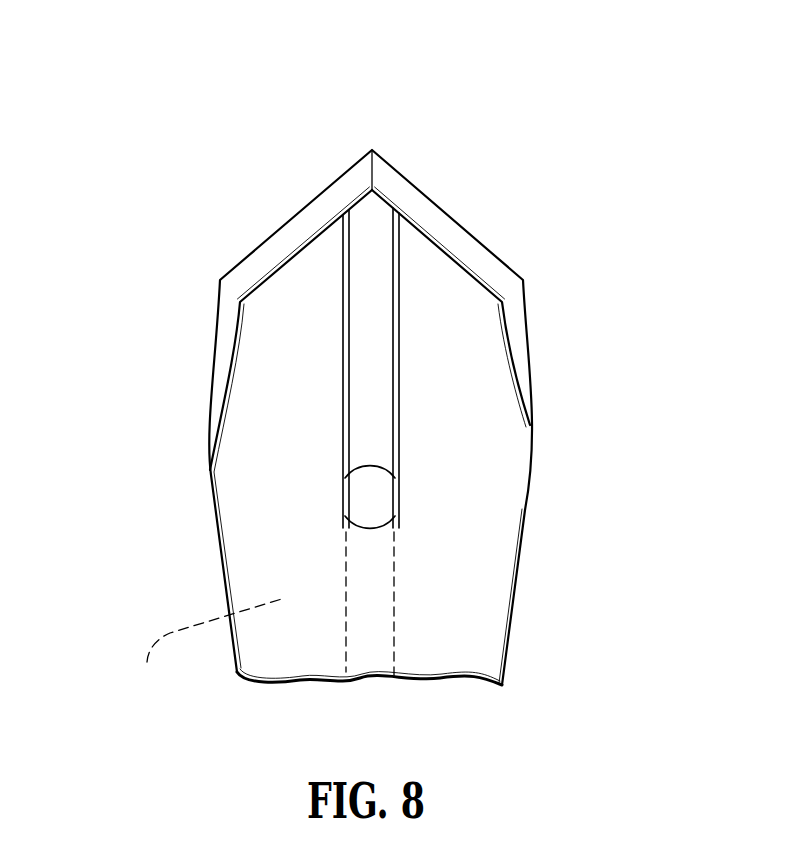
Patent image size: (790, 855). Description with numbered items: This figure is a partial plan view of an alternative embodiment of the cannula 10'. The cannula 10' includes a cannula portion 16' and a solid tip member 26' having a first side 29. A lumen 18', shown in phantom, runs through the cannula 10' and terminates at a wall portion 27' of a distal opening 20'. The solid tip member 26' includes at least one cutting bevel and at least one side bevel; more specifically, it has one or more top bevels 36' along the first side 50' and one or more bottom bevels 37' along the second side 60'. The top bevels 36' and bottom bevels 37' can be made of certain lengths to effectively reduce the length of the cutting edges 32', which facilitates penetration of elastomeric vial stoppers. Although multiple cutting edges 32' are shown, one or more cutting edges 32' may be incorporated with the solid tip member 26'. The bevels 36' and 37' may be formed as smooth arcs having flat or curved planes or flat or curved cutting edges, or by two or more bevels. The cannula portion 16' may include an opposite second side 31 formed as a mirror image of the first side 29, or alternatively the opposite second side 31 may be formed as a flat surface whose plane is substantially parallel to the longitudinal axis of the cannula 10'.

The cannula 10' is at (366, 381).
The cutting edges 32' is at (393, 383).
The top bevels 36' is at (241, 406).
The bottom bevels 37' is at (531, 423).
The wall portion 27' is at (479, 444).
The distal opening 20' is at (278, 534).
The lumen 18' is at (369, 690).
The opposite second side 31 is at (210, 647).
The first side 29 is at (478, 397).
The second side 60' is at (605, 476).
The first side 50' is at (128, 476).
The solid tip member 26' is at (175, 512).
The cannula portion 16' is at (543, 604).